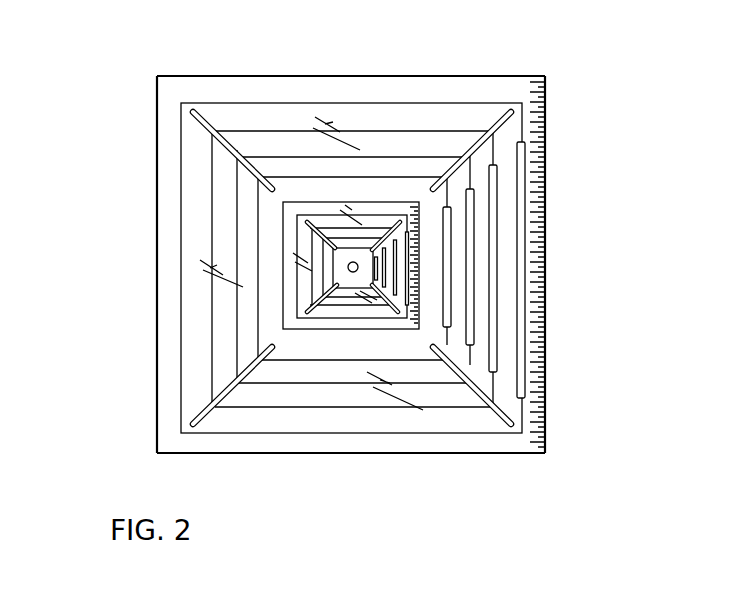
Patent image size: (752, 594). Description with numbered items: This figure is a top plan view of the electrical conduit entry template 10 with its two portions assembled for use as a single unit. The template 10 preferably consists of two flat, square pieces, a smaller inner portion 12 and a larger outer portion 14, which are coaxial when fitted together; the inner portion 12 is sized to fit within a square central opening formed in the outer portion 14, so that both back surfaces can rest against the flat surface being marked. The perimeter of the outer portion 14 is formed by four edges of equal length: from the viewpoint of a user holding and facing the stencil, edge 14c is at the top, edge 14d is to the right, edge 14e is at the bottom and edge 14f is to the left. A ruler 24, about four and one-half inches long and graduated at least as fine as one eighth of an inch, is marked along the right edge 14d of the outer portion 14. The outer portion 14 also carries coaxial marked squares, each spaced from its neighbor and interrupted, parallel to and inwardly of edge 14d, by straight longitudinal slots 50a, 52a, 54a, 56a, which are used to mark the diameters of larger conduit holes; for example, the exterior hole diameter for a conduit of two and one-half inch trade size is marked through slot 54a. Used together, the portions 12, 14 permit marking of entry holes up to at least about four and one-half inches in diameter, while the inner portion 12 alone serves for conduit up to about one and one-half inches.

The electrical conduit entry template 10 is at (117, 127).
The inner template portion 12 is at (290, 242).
The outer template portion 14 is at (448, 63).
The top edge of outer portion 14c is at (322, 77).
The right edge of outer portion 14d is at (547, 107).
The bottom edge of outer portion 14e is at (388, 455).
The left edge of outer portion 14f is at (157, 357).
The ruler 24 is at (546, 222).
The longitudinal slot 50a is at (521, 144).
The longitudinal slot 52a is at (498, 184).
The longitudinal slot 54a is at (470, 296).
The longitudinal slot 56a is at (447, 318).